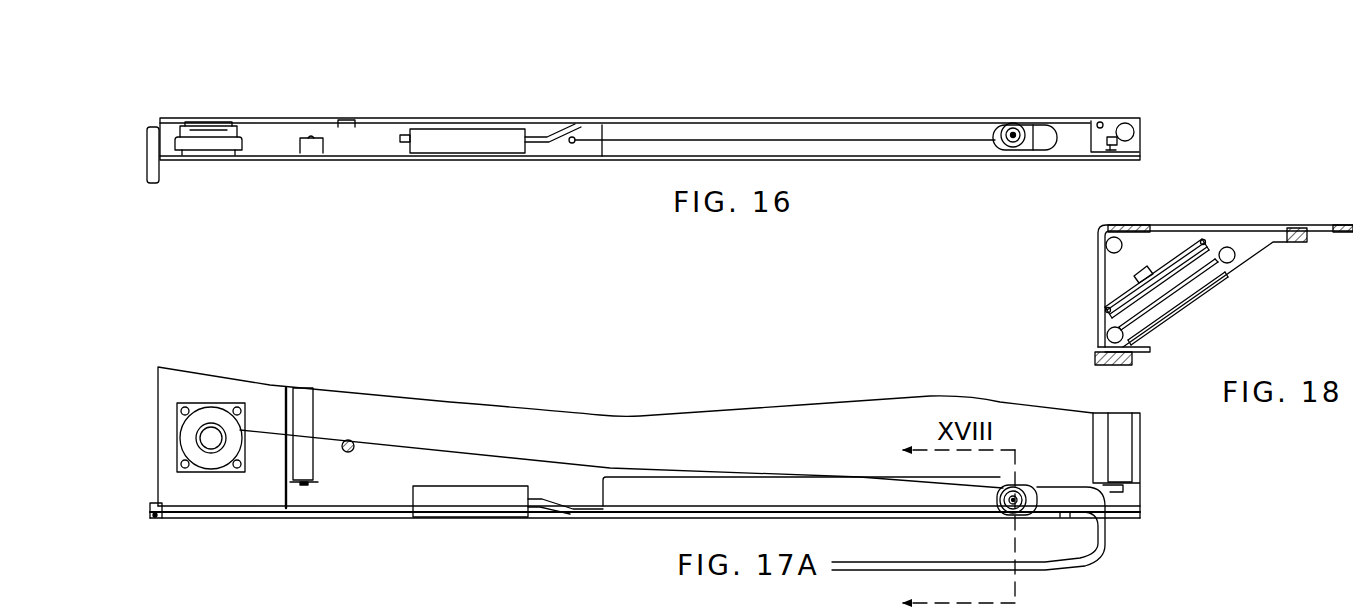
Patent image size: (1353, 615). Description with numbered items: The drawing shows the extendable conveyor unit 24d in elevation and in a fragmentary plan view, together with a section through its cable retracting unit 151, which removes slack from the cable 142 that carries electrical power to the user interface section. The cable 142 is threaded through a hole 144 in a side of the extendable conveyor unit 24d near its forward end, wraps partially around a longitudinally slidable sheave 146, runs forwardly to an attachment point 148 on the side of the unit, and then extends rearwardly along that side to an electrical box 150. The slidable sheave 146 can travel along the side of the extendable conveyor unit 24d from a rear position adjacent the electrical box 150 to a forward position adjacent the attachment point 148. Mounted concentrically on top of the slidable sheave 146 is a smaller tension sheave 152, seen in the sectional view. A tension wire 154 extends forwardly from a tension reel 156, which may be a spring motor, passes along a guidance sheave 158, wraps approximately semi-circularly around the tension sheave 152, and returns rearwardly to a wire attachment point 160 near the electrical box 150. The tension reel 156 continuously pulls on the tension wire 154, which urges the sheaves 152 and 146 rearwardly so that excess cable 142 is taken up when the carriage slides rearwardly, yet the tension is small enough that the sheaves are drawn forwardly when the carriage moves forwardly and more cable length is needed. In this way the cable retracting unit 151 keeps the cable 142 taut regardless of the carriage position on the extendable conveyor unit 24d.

In FIG. 16, the extendable conveyor unit 24d is at (470, 112).
In FIG. 17A, the extendable conveyor unit 24d is at (615, 412).
In FIG. 16, the cable 142 is at (1023, 148).
In FIG. 18, the cable 142 is at (1106, 247).
In FIG. 16, the hole 144 is at (1100, 122).
In FIG. 16, the longitudinally slidable sheave 146 is at (1043, 142).
In FIG. 17A, the longitudinally slidable sheave 146 is at (1028, 492).
In FIG. 18, the longitudinally slidable sheave 146 is at (1180, 292).
In FIG. 17A, the attachment point 148 is at (1063, 512).
In FIG. 16, the electrical box 150 is at (445, 146).
In FIG. 17A, the electrical box 150 is at (468, 503).
In FIG. 16, the cable retracting unit 151 is at (742, 93).
In FIG. 17A, the cable retracting unit 151 is at (753, 446).
In FIG. 16, the tension sheave 152 is at (997, 125).
In FIG. 18, the tension sheave 152 is at (1200, 238).
In FIG. 17A, the tension wire 154 is at (442, 458).
In FIG. 18, the tension wire 154 is at (1207, 240).
In FIG. 16, the tension reel 156 is at (207, 143).
In FIG. 17A, the tension reel 156 is at (217, 412).
In FIG. 16, the guidance sheave 158 is at (346, 120).
In FIG. 17A, the guidance sheave 158 is at (352, 440).
In FIG. 16, the wire attachment point 160 is at (570, 143).